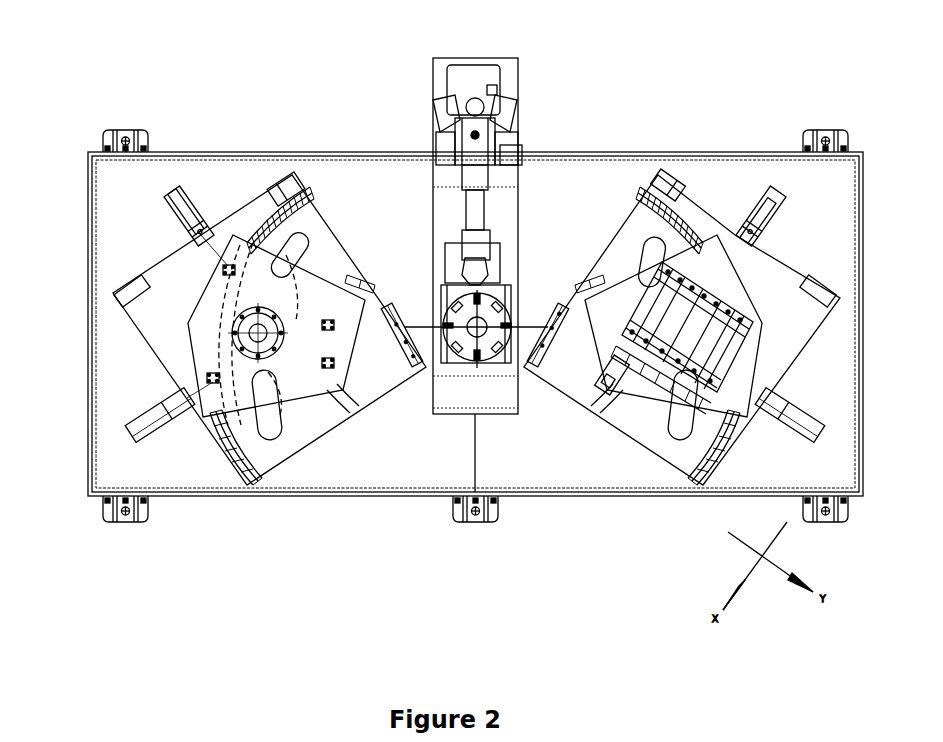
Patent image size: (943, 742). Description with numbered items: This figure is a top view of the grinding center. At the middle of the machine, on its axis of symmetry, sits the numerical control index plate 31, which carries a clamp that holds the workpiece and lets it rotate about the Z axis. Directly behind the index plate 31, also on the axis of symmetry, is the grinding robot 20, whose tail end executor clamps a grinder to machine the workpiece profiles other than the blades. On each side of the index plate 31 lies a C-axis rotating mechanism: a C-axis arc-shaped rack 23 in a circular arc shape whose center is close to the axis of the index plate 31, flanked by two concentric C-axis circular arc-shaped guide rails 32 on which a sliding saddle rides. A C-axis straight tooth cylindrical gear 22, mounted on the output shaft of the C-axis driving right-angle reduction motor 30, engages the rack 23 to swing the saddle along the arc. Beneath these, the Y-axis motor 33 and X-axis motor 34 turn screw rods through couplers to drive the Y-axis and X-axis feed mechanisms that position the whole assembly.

The grinding robot 20 is at (440, 122).
The C-axis straight tooth cylindrical gear 22 is at (243, 338).
The C-axis arc-shaped rack 23 is at (270, 395).
The C-axis driving right-angle reduction motor 30 is at (624, 398).
The numerical control index plate 31 is at (490, 357).
The C-axis circular arc-shaped guide rail 32 is at (296, 186).
The Y-axis motor 33 is at (190, 232).
The X-axis motor 34 is at (128, 424).